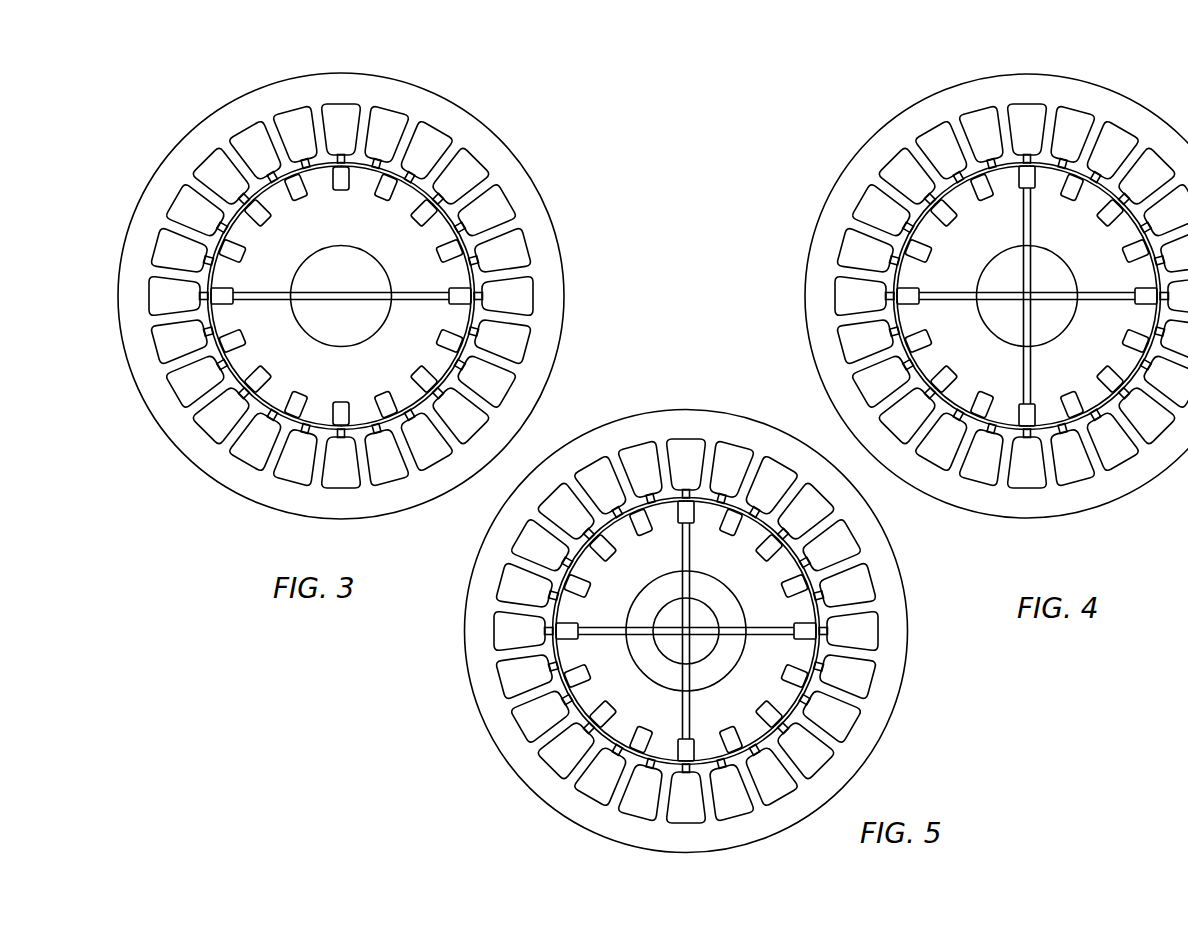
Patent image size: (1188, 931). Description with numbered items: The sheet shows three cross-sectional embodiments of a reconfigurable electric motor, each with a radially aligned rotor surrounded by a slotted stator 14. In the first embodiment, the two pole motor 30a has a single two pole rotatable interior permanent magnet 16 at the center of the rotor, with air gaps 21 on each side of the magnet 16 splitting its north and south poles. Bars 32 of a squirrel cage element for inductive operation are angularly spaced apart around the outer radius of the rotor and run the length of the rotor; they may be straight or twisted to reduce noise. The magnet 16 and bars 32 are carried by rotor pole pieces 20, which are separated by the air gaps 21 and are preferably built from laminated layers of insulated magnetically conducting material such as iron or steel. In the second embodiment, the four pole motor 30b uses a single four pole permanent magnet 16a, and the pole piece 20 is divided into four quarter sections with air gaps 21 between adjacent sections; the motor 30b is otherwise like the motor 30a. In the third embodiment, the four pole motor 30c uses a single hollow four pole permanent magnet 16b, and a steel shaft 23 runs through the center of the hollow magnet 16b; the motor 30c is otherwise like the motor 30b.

In FIG. 3, the two pole motor 30a is at (203, 97).
In FIG. 4, the four pole motor 30b is at (846, 130).
In FIG. 5, the four pole motor 30c is at (662, 407).
In FIG. 3, the stator 14 is at (214, 417).
In FIG. 4, the stator 14 is at (982, 468).
In FIG. 5, the stator 14 is at (522, 726).
In FIG. 3, the rotor pole pieces 20 is at (363, 416).
In FIG. 4, the rotor pole pieces 20 is at (1050, 414).
In FIG. 5, the rotor pole pieces 20 is at (708, 750).
In FIG. 3, the bars 32 is at (303, 413).
In FIG. 4, the bars 32 is at (988, 418).
In FIG. 5, the bars 32 is at (647, 750).
In FIG. 3, the air gaps 21 is at (254, 299).
In FIG. 4, the air gaps 21 is at (956, 300).
In FIG. 5, the air gaps 21 is at (600, 634).
In FIG. 3, the interior permanent magnet 16 is at (369, 320).
In FIG. 4, the four pole permanent magnet 16a is at (1062, 320).
In FIG. 5, the hollow four pole permanent magnet 16b is at (700, 672).
In FIG. 5, the steel shaft 23 is at (686, 631).